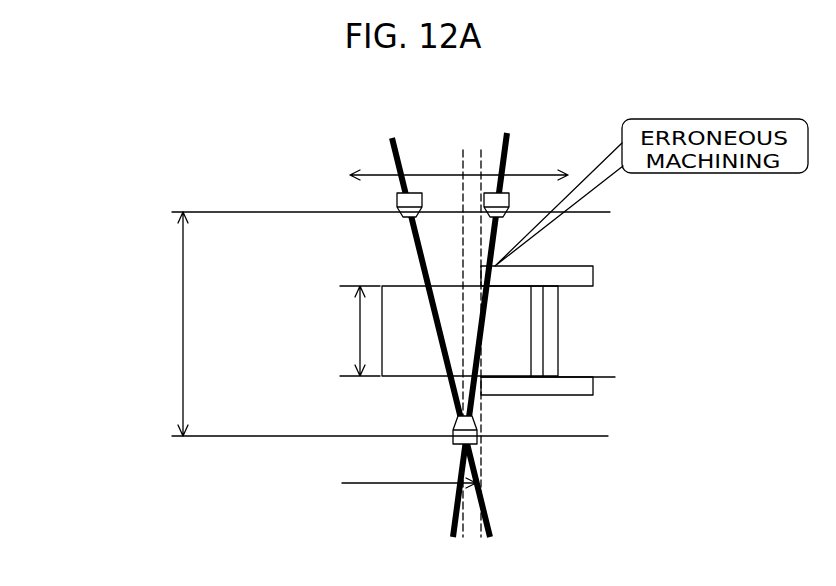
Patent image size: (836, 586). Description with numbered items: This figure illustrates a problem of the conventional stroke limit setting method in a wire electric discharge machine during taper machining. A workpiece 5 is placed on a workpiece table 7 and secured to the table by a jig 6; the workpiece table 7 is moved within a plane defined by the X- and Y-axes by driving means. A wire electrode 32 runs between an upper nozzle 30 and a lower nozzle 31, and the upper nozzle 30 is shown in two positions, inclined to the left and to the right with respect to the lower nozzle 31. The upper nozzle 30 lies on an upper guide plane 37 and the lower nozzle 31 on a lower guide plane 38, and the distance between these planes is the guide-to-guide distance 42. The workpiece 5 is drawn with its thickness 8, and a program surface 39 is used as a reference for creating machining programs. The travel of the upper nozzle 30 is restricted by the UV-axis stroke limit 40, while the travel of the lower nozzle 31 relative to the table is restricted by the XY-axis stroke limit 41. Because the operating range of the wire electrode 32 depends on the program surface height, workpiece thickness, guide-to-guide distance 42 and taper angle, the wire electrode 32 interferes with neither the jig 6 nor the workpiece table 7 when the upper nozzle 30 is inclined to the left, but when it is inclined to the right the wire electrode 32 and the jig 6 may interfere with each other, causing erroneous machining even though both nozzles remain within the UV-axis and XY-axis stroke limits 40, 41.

The workpiece 5 is at (402, 297).
The jig 6 is at (593, 274).
The workpiece table 7 is at (585, 385).
The workpiece thickness 8 is at (358, 331).
The upper nozzle 30 is at (408, 216).
The lower nozzle 31 is at (453, 444).
The wire electrode 32 is at (490, 525).
The upper guide plane 37 is at (408, 212).
The lower guide plane 38 is at (411, 433).
The program surface 39 is at (614, 377).
The UV-axis stroke limit 40 is at (442, 175).
The XY-axis stroke limit 41 is at (409, 498).
The guide-to-guide distance 42 is at (163, 324).